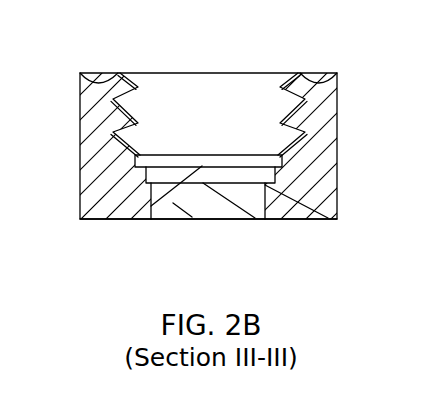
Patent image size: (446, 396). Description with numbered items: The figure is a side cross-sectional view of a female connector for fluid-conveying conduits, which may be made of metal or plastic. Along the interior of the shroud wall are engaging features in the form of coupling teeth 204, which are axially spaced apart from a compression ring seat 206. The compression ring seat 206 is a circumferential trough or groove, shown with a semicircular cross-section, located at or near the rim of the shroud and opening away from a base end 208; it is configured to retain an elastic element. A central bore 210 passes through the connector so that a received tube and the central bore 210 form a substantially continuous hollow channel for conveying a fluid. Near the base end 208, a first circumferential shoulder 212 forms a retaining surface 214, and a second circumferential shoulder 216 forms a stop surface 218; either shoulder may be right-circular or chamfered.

The coupling teeth 204 is at (140, 79).
The compression ring seat 206 is at (95, 73).
The base end 208 is at (170, 220).
The central bore 210 is at (175, 208).
The first circumferential shoulder 212 is at (323, 218).
The retaining surface 214 is at (252, 218).
The second circumferential shoulder 216 is at (80, 214).
The stop surface 218 is at (153, 206).